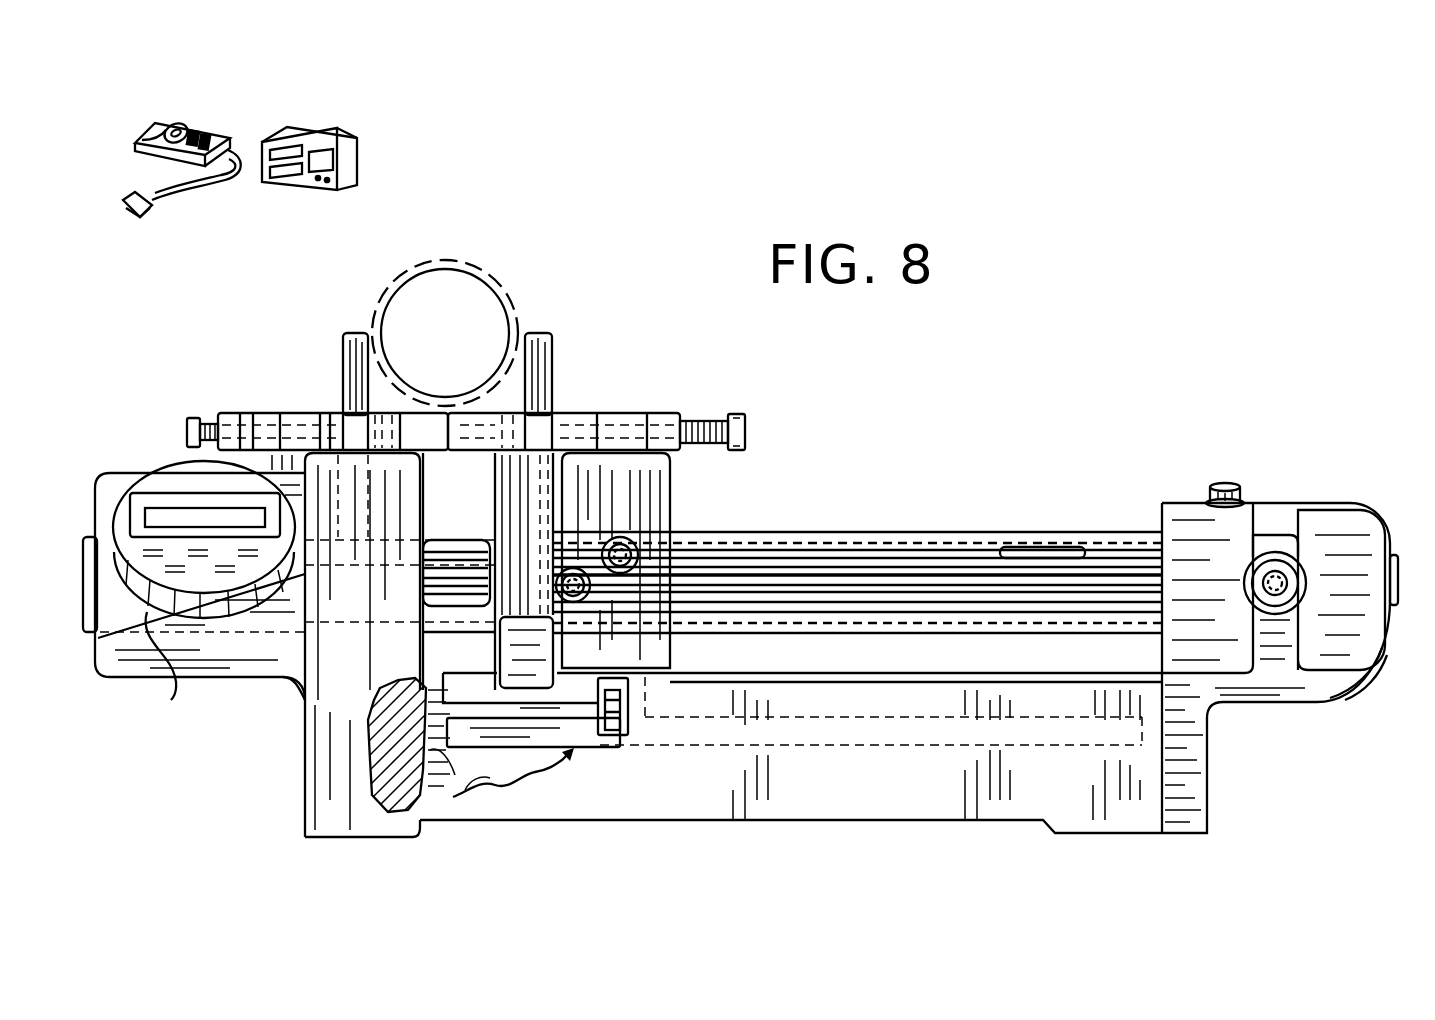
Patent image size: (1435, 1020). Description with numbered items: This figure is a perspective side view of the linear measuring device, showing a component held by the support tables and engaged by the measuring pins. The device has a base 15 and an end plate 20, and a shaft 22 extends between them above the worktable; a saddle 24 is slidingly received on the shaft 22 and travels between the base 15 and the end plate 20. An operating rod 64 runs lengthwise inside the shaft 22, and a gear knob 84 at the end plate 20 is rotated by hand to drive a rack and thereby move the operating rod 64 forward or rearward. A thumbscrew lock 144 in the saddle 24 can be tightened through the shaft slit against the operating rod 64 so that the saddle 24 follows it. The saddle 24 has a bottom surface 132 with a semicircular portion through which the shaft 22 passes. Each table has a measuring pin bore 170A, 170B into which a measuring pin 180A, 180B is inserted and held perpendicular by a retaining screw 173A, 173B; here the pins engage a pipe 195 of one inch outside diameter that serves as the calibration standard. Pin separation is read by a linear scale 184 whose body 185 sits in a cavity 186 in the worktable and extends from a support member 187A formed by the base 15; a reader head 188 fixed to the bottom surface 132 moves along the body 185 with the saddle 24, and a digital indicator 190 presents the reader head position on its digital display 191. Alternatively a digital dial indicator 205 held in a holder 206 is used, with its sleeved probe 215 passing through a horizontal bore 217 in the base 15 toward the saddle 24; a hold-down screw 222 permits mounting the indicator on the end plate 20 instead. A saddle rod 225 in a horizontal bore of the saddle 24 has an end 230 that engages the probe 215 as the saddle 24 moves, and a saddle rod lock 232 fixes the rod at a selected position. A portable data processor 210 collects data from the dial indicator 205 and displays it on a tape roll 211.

The base 15 is at (300, 785).
The end plate 20 is at (1209, 745).
The shaft 22 is at (1079, 542).
The saddle 24 is at (673, 472).
The operating rod 64 is at (1117, 582).
The gear knob 84 is at (1224, 482).
The bottom surface 132 is at (672, 676).
The thumbscrew lock 144 is at (663, 670).
The measuring pin bore 170A is at (556, 412).
The measuring pin bore 170B is at (345, 412).
The retaining screw 173A is at (746, 425).
The retaining screw 173B is at (197, 420).
The measuring pin 180A is at (553, 344).
The measuring pin 180B is at (345, 346).
The linear scale 184 is at (568, 762).
The body 185 is at (521, 732).
The cavity 186 is at (456, 773).
The support member 187A is at (446, 788).
The reader head 188 is at (612, 742).
The digital indicator 190 is at (347, 178).
The digital display 191 is at (320, 150).
The pipe 195 is at (490, 266).
The digital dial indicator 205 is at (176, 480).
The holder 206 is at (172, 690).
The portable data processor 210 is at (149, 156).
The tape roll 211 is at (194, 120).
The probe 215 is at (490, 560).
The horizontal bore 217 is at (303, 700).
The hold-down screw 222 is at (1283, 552).
The saddle rod 225 is at (873, 552).
The end 230 is at (488, 603).
The saddle rod lock 232 is at (637, 541).